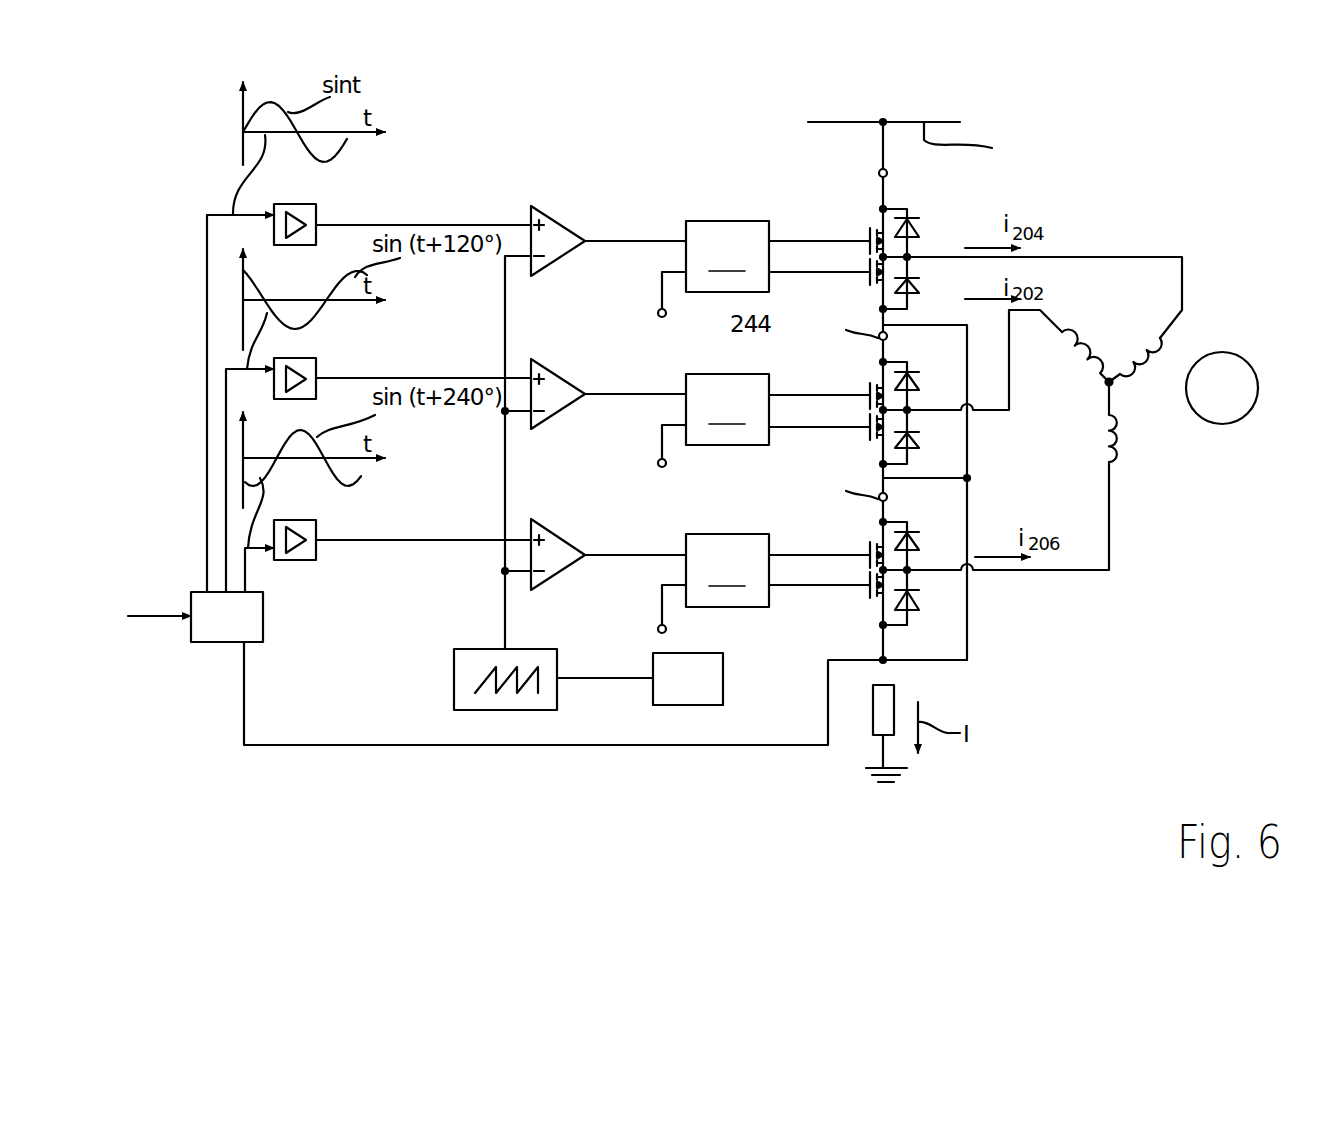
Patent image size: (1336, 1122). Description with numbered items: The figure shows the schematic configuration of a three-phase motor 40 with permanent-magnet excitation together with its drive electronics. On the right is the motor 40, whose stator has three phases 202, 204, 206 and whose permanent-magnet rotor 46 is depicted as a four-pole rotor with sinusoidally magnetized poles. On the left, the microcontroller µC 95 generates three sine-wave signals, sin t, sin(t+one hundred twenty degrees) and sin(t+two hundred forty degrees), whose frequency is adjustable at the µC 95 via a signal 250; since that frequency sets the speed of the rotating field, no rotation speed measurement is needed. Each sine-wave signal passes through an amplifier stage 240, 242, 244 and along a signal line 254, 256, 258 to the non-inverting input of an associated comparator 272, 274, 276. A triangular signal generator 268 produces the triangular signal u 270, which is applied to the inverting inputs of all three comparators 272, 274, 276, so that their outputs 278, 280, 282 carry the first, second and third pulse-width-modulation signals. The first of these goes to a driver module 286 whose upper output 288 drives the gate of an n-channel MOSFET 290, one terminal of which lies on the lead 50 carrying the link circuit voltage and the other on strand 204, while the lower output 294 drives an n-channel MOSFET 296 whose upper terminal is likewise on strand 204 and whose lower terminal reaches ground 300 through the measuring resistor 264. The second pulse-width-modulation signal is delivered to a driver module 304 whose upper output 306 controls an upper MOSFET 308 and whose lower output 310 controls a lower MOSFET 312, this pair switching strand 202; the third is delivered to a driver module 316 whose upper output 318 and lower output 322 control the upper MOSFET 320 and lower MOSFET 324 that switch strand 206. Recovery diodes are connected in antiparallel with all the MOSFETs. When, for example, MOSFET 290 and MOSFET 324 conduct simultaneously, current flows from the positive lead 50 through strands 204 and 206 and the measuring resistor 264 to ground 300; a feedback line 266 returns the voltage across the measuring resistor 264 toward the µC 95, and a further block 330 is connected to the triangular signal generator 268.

The motor 40 is at (1208, 471).
The permanent-magnet rotor 46 is at (1240, 413).
The lead 50 is at (835, 122).
The microcontroller (µC) 95 is at (263, 612).
The phase (strand) 202 is at (1068, 325).
The phase (strand) 204 is at (1165, 342).
The phase (strand) 206 is at (1118, 440).
The amplifier for sin t 240 is at (330, 210).
The amplifier for sin(t+120) 242 is at (330, 364).
The amplifier for sin(t+240) 244 is at (330, 526).
The signal 250 is at (147, 617).
The sinusoidal signal line 254 is at (428, 225).
The sinusoidal signal line 256 is at (428, 378).
The sinusoidal signal line 258 is at (428, 540).
The measuring resistor 264 is at (872, 717).
The current feedback line 266 is at (732, 745).
The triangular signal generator 268 is at (454, 686).
The triangular signal u 270 is at (505, 612).
The comparator 272 is at (567, 257).
The comparator 274 is at (567, 412).
The comparator 276 is at (567, 572).
The comparator output 278 is at (608, 241).
The comparator output 280 is at (608, 394).
The comparator output 282 is at (608, 555).
The driver module 286 is at (670, 238).
The upper output 288 is at (783, 241).
The n-channel MOSFET 290 is at (850, 236).
The lower output 294 is at (783, 272).
The n-channel MOSFET 296 is at (863, 282).
The ground 300 is at (885, 784).
The driver module 304 is at (670, 391).
The upper output 306 is at (783, 395).
The upper n-channel MOSFET 308 is at (862, 404).
The lower output 310 is at (783, 427).
The lower n-channel MOSFET 312 is at (861, 436).
The driver module 316 is at (670, 551).
The upper output 318 is at (783, 555).
The upper n-channel MOSFET 320 is at (862, 564).
The lower output 322 is at (783, 585).
The lower n-channel MOSFET 324 is at (861, 596).
The current limiting stage 330 is at (670, 689).